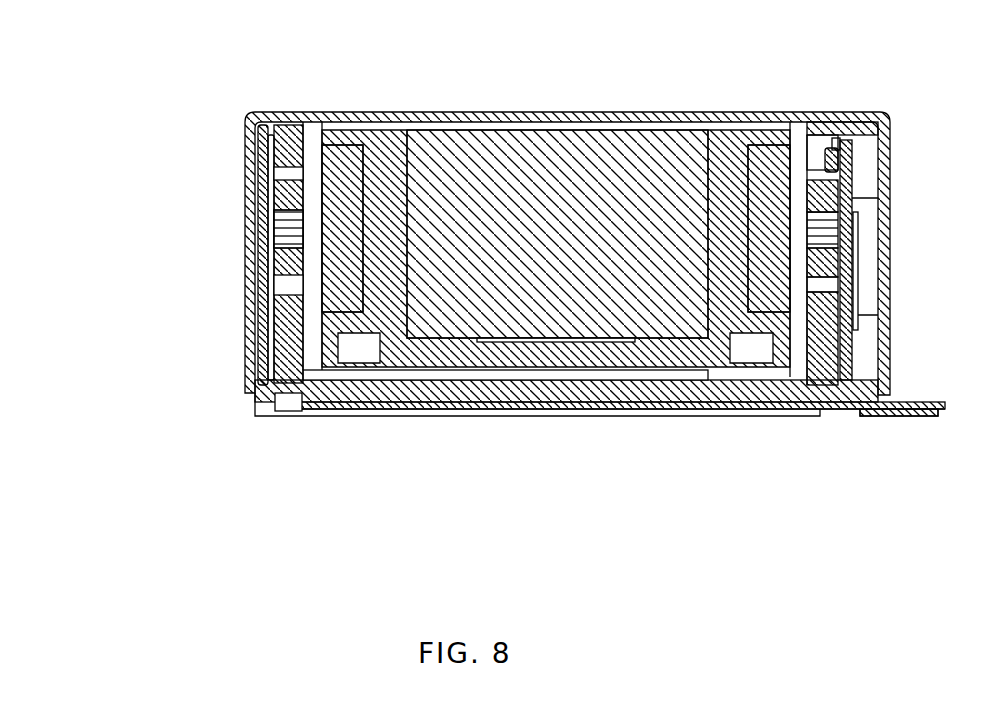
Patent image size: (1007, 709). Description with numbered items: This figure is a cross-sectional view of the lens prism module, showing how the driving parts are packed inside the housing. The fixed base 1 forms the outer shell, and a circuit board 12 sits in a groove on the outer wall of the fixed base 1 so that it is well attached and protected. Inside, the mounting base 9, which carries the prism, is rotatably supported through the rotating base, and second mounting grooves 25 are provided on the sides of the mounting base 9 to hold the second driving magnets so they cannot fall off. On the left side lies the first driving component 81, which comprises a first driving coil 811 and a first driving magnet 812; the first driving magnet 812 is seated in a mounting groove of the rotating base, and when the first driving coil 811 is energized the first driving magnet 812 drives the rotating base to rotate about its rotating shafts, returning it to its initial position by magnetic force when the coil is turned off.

The fixed base 1 is at (435, 380).
The mounting base 9 is at (735, 152).
The circuit board 12 is at (262, 178).
The second mounting groove 25 is at (368, 284).
The first driving component 81 is at (196, 254).
The first driving coil 811 is at (287, 202).
The first driving magnet 812 is at (337, 245).